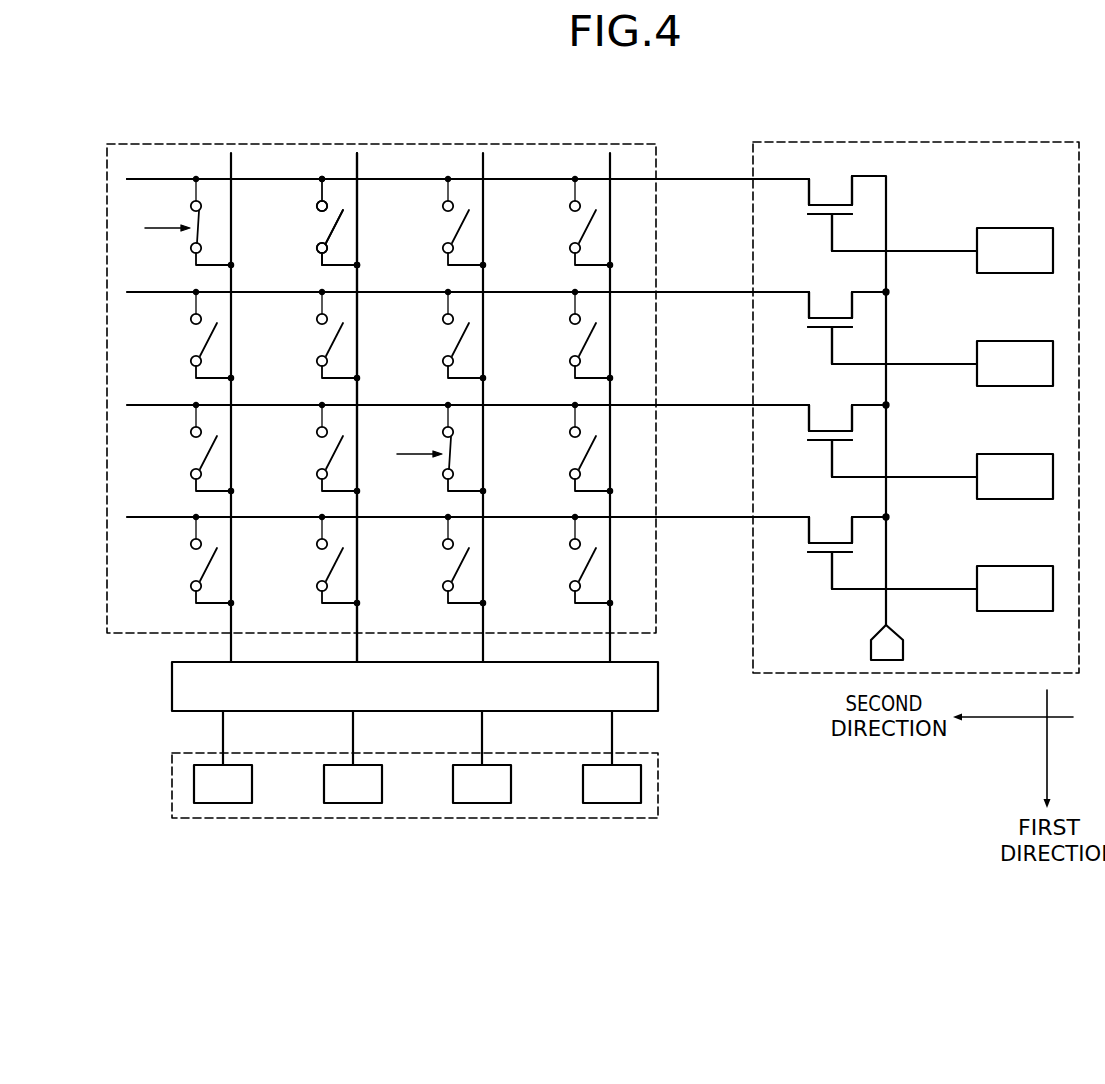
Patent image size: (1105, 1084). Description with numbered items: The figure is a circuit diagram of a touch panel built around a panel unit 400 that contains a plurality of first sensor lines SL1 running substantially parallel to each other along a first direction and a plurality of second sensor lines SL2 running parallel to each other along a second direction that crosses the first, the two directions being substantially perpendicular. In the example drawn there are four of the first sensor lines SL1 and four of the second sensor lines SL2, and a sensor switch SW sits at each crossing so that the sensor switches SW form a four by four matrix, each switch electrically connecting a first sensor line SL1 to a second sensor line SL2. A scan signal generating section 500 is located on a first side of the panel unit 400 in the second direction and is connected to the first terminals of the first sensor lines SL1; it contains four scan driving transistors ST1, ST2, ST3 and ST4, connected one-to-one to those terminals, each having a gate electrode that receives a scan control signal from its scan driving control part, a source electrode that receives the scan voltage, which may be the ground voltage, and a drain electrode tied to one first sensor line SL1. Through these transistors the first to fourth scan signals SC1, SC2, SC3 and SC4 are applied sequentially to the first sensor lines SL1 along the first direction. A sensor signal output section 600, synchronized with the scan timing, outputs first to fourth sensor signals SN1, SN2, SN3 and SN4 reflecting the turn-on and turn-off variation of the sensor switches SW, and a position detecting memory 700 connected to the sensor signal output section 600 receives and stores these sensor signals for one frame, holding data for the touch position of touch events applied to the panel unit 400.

The panel unit 400 is at (168, 144).
The scan signal generating section 500 is at (1020, 141).
The sensor signal output section 600 is at (172, 687).
The position detecting memory 700 is at (172, 786).
The sensor switch SW is at (310, 231).
The first sensor line SL1 is at (532, 172).
The second sensor line SL2 is at (366, 232).
The first scan signal SC1 is at (704, 172).
The second scan signal SC2 is at (704, 285).
The third scan signal SC3 is at (704, 398).
The fourth scan signal SC4 is at (704, 510).
The first scan driving transistor ST1 is at (834, 183).
The second scan driving transistor ST2 is at (833, 305).
The third scan driving transistor ST3 is at (833, 418).
The fourth scan driving transistor ST4 is at (833, 530).
The first sensor signal SN1 is at (238, 738).
The second sensor signal SN2 is at (368, 738).
The third sensor signal SN3 is at (498, 738).
The fourth sensor signal SN4 is at (628, 738).